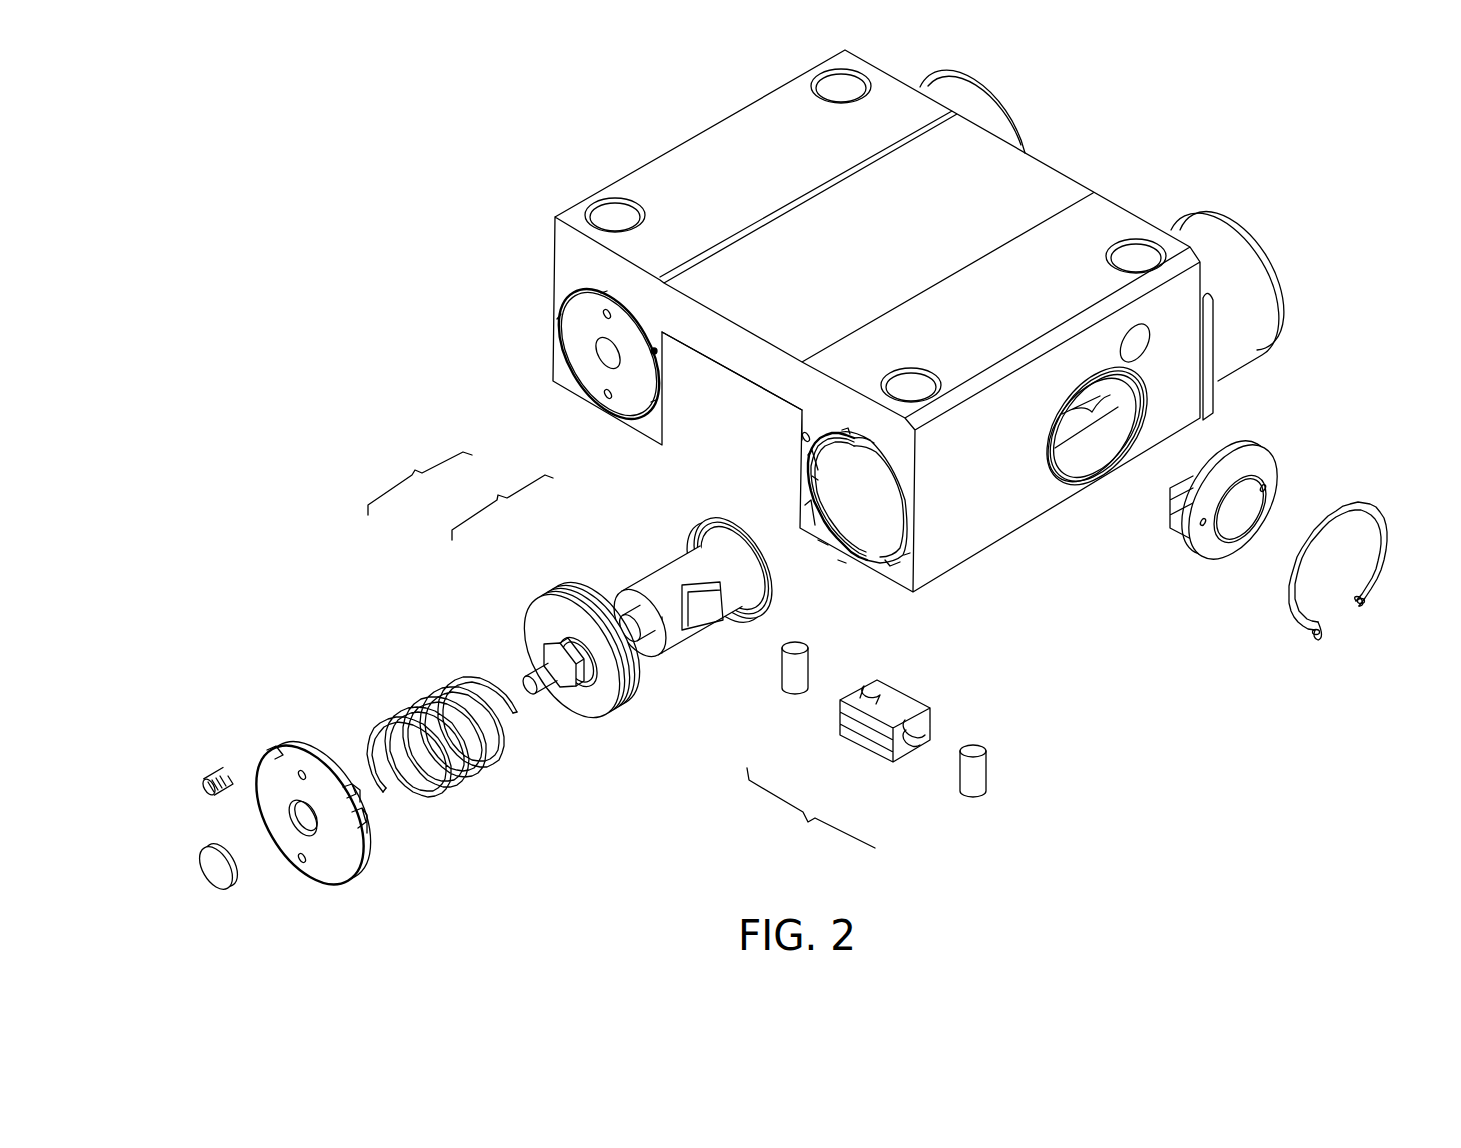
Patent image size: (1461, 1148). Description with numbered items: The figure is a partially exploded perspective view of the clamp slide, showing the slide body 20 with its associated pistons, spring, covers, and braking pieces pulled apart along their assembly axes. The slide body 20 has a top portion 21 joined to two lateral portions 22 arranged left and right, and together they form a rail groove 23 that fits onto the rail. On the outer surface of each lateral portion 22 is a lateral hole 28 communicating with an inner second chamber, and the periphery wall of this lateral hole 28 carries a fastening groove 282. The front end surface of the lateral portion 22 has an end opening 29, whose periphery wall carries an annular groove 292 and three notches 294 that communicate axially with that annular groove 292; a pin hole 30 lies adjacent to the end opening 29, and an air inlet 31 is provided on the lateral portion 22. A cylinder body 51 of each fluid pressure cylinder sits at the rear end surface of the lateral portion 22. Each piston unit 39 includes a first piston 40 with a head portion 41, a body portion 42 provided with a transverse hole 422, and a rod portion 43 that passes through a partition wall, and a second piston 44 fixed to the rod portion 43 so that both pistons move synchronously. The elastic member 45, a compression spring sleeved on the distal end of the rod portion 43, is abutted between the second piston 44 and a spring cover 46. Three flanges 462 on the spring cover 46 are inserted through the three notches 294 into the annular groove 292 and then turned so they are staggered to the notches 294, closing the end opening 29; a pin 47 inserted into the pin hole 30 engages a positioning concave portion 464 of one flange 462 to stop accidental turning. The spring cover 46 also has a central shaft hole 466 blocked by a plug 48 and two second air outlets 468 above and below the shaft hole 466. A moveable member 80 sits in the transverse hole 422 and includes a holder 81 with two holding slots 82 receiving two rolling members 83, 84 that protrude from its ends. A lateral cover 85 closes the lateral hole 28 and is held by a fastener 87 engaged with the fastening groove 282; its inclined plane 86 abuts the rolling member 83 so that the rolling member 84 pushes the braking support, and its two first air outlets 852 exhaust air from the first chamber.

The slide body 20 is at (690, 130).
The top portion 21 is at (1030, 193).
The lateral portions 22 is at (560, 368).
The rail groove 23 is at (737, 425).
The lateral hole 28 is at (1045, 470).
The fastening groove 282 is at (1113, 463).
The end opening 29 is at (907, 483).
The annular groove 292 is at (842, 562).
The notches 294 is at (815, 478).
The pin hole 30 is at (805, 440).
The air inlet 31 is at (1140, 341).
The piston unit 39 is at (420, 478).
The first piston 40 is at (502, 505).
The head portion 41 is at (700, 538).
The body portion 42 is at (660, 582).
The transverse hole 422 is at (692, 627).
The rod portion 43 is at (632, 623).
The second piston 44 is at (542, 633).
The elastic member 45 is at (432, 705).
The spring cover 46 is at (352, 873).
The flanges 462 is at (363, 822).
The positioning concave portion 464 is at (363, 808).
The shaft hole 466 is at (293, 823).
The second air outlets 468 is at (302, 773).
The pin 47 is at (217, 773).
The plug 48 is at (205, 866).
The cylinder body 51 is at (987, 110).
The moveable member 80 is at (811, 811).
The holder 81 is at (862, 755).
The holding slots 82 is at (868, 690).
The rolling member 83 is at (970, 775).
The rolling member 84 is at (797, 677).
The lateral cover 85 is at (1278, 453).
The first air outlets 852 is at (1265, 488).
The inclined plane 86 is at (1192, 480).
The fastener 87 is at (1373, 507).